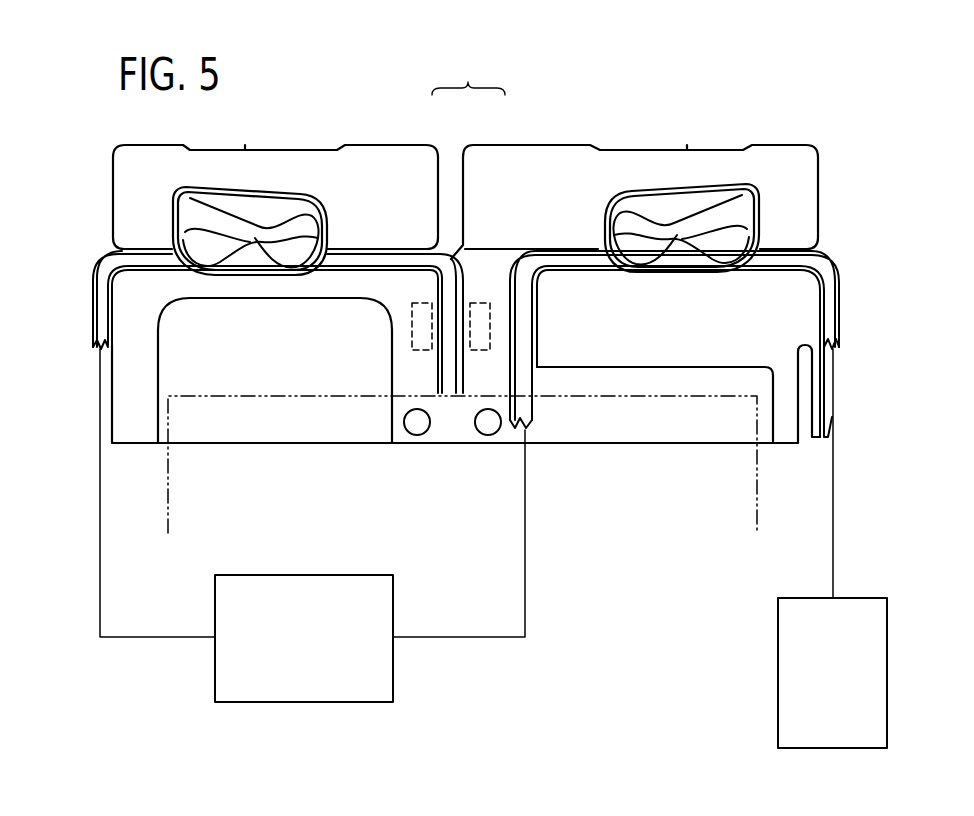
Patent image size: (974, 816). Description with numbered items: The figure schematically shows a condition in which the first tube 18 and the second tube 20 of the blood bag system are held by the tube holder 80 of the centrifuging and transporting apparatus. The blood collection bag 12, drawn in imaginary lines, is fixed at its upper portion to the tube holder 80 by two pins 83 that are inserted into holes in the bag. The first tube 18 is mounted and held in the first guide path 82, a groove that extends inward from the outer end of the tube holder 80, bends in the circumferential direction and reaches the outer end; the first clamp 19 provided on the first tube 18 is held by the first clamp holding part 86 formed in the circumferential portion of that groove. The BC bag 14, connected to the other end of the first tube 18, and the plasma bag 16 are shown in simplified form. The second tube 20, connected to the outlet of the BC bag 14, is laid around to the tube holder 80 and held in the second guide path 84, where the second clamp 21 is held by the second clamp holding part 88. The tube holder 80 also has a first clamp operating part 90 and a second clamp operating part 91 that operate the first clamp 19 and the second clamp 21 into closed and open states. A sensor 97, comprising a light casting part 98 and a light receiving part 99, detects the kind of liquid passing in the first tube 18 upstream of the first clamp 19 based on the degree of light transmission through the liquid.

The blood collection bag 12 is at (273, 393).
The BC bag 14 is at (378, 601).
The plasma bag 16 is at (880, 675).
The first tube 18 is at (105, 273).
The first clamp 19 is at (222, 197).
The second tube 20 is at (832, 298).
The second clamp 21 is at (672, 205).
The tube holder 80 is at (500, 263).
The first guide path 82 is at (392, 254).
The pins 83 is at (488, 462).
The second guide path 84 is at (571, 264).
The first clamp holding part 86 is at (322, 198).
The second clamp holding part 88 is at (758, 188).
The first clamp operating part 90 is at (286, 128).
The second clamp operating part 91 is at (742, 124).
The sensor 97 is at (458, 201).
The light casting part 98 is at (424, 302).
The light receiving part 99 is at (481, 302).